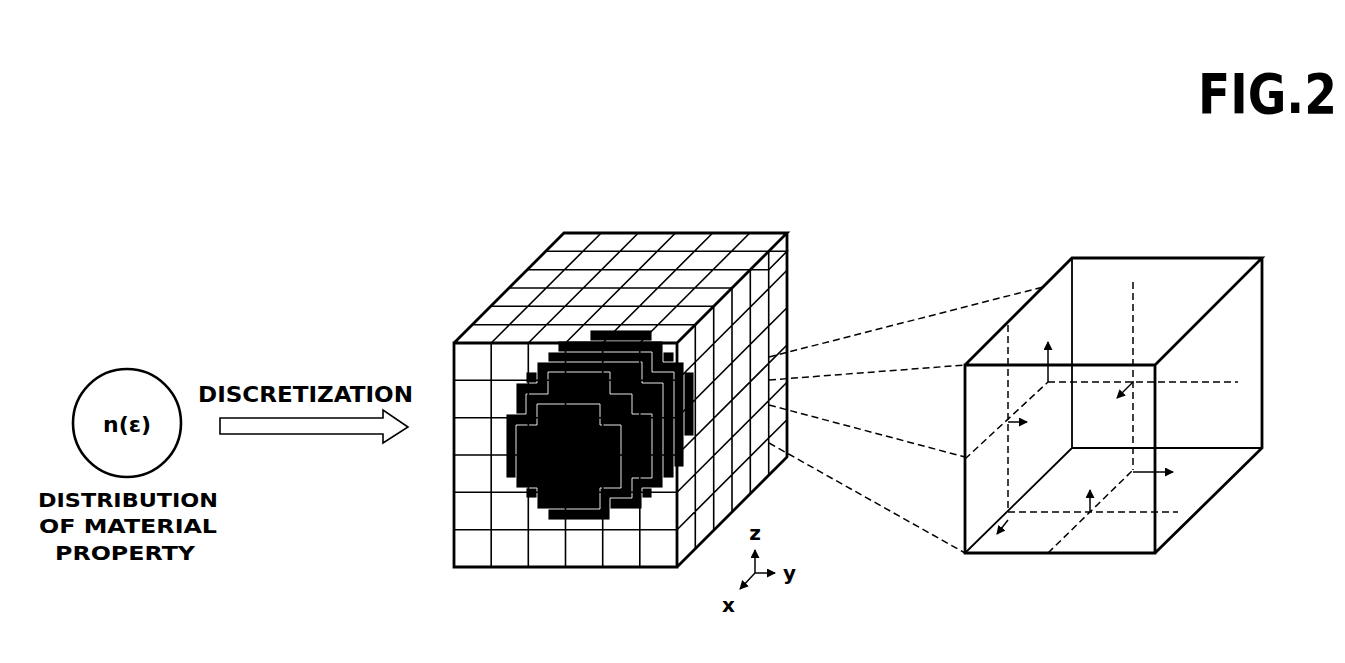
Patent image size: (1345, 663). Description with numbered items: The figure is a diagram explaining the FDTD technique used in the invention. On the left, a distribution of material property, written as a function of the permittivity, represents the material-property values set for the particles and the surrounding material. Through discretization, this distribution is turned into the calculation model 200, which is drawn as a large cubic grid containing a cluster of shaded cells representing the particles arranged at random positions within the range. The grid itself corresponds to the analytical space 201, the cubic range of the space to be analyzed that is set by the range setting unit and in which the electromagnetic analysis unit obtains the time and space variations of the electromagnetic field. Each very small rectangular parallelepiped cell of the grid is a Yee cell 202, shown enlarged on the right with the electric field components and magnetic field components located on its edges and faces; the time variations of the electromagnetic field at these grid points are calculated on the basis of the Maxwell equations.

The calculation model 200 is at (694, 150).
The analytical space 201 is at (787, 233).
The Yee cell 202 is at (1262, 258).